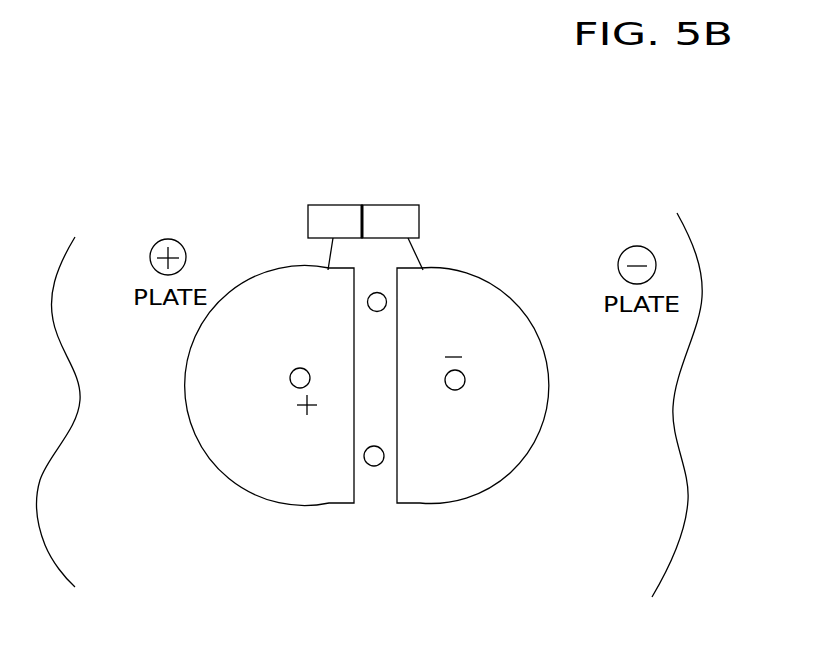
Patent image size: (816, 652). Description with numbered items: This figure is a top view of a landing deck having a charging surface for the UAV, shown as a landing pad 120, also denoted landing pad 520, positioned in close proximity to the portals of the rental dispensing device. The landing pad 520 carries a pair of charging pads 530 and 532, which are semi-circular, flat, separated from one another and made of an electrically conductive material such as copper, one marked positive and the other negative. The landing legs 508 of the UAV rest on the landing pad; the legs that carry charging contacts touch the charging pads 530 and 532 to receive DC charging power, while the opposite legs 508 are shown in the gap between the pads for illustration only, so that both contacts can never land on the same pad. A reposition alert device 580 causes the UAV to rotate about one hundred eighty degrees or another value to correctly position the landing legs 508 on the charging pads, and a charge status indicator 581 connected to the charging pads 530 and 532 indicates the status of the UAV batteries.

The landing pad 120 is at (572, 230).
The landing legs 508 is at (385, 295).
The landing pad 520 is at (558, 503).
The charging pad 530 is at (315, 443).
The charging pad 532 is at (472, 443).
The reposition alert device 580 is at (345, 226).
The charge status indicator 581 is at (403, 223).